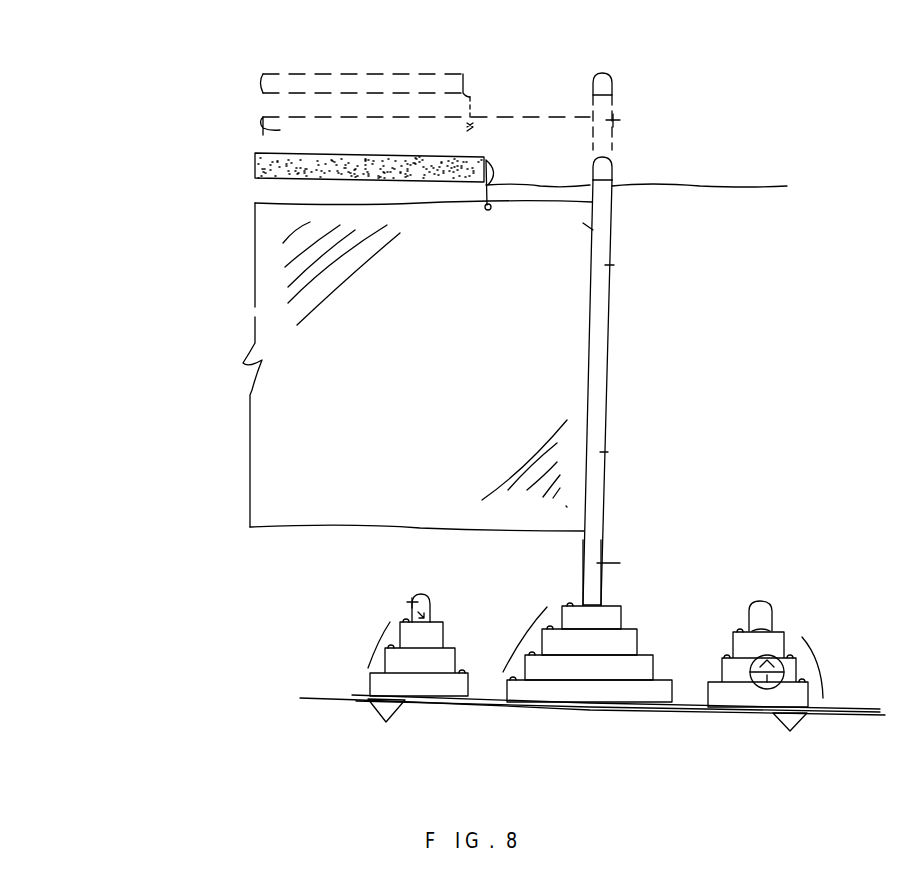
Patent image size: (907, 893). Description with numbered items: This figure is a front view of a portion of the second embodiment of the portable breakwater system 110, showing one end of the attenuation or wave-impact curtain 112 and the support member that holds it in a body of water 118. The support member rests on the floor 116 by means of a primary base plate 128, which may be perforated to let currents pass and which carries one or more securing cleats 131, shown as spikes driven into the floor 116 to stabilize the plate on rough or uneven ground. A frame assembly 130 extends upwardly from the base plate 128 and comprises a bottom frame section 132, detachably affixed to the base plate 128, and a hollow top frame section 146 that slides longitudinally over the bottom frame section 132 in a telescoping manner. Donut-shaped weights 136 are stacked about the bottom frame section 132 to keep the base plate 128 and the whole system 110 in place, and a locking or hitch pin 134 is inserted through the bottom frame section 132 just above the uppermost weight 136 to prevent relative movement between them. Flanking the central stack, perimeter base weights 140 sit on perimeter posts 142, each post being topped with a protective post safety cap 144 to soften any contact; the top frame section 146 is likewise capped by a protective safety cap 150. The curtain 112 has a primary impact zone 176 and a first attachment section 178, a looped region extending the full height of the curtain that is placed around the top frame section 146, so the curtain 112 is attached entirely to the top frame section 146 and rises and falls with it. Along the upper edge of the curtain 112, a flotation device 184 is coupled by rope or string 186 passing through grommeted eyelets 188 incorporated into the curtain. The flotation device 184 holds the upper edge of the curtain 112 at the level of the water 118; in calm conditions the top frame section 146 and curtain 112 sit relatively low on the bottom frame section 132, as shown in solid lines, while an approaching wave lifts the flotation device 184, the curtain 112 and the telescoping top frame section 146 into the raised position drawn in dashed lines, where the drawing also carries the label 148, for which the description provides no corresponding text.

The portable breakwater system 110 is at (203, 240).
The attenuation or wave-impact curtain 112 is at (263, 118).
The floor 116 is at (698, 718).
The body of water 118 is at (780, 184).
The primary base plate 128 is at (347, 697).
The frame assembly 130 is at (603, 543).
The securing cleat 131 is at (378, 712).
The bottom frame section 132 is at (629, 570).
The locking or hitch pin 134 is at (600, 605).
The weight 136 is at (513, 641).
The perimeter base weight 140 is at (373, 650).
The perimeter post 142 is at (405, 618).
The protective post safety cap 144 is at (418, 594).
The top frame section 146 is at (607, 193).
The post extension 148 is at (616, 120).
The protective safety cap 150 is at (613, 167).
The primary impact zone 176 is at (352, 452).
The first attachment section 178 is at (573, 297).
The flotation device 184 is at (333, 158).
The rope or string 186 is at (533, 153).
The grommeted eyelet 188 is at (491, 210).